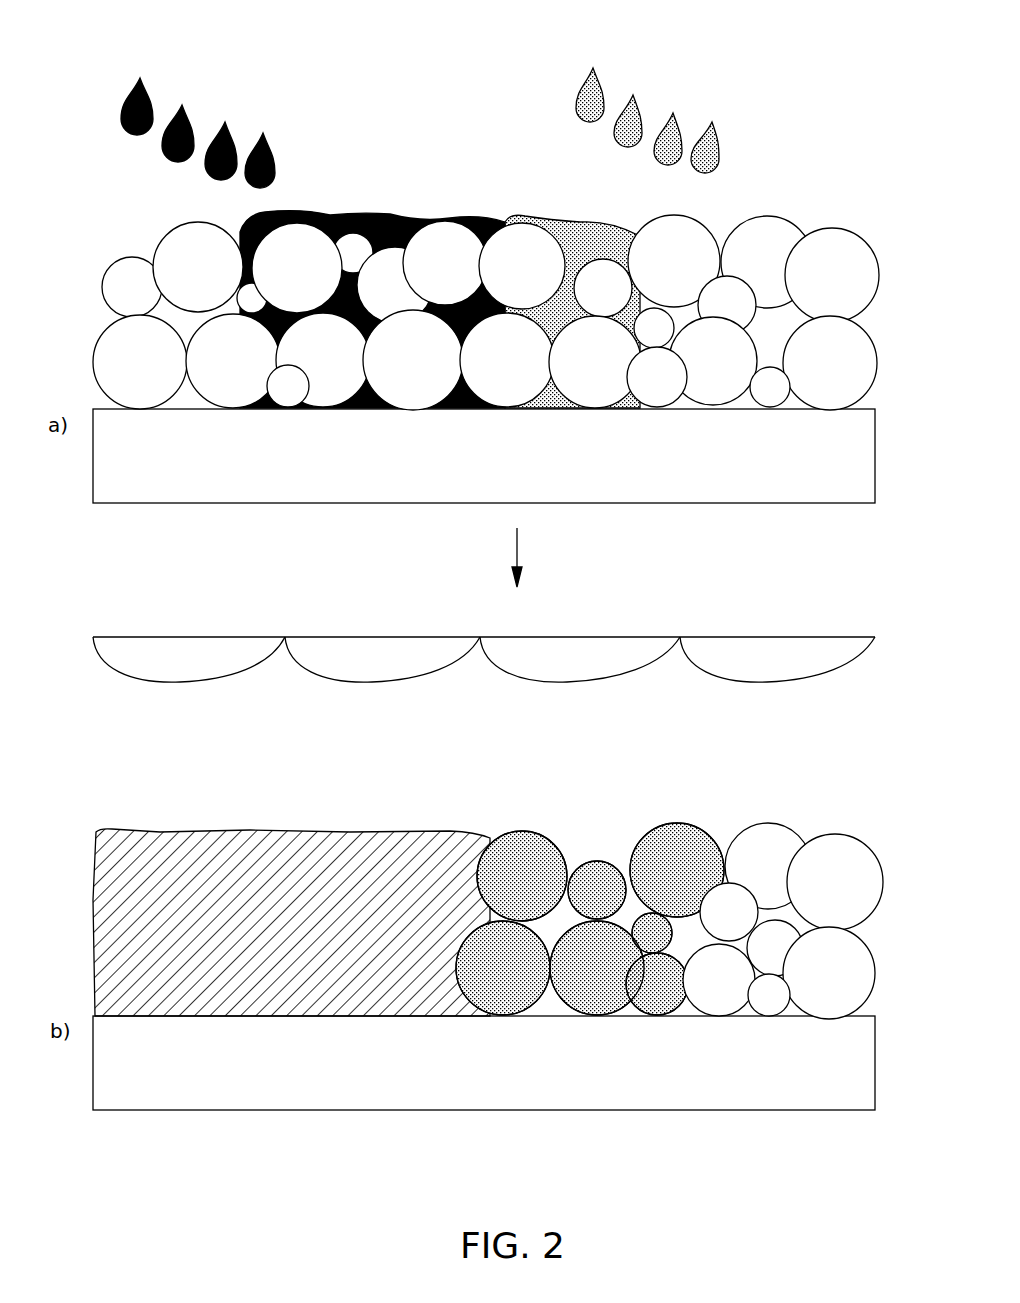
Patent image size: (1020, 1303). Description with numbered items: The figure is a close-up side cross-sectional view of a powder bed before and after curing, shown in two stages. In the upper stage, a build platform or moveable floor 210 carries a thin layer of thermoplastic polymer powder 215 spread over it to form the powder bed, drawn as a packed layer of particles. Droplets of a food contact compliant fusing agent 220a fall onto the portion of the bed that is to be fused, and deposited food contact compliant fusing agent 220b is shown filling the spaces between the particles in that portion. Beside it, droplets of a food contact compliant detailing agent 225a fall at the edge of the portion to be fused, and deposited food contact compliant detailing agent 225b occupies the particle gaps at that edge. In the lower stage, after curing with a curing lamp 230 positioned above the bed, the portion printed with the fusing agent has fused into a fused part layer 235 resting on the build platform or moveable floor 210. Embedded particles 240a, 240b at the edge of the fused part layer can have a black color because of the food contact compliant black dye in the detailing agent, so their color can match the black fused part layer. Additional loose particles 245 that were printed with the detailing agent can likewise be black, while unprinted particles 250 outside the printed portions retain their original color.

The build platform or moveable floor 210 is at (505, 466).
The thermoplastic polymer powder 215 is at (127, 278).
The droplets of food contact compliant fusing agent 220a is at (132, 88).
The deposited food contact compliant fusing agent 220b is at (393, 212).
The droplets of food contact compliant detailing agent 225a is at (590, 100).
The deposited food contact compliant detailing agent 225b is at (575, 230).
The curing lamp 230 is at (147, 657).
The fused part layer 235 is at (260, 848).
The embedded particles 240a is at (488, 967).
The embedded particles 240b is at (523, 862).
The additional loose particles 245 is at (663, 862).
The unprinted particles 250 is at (770, 862).